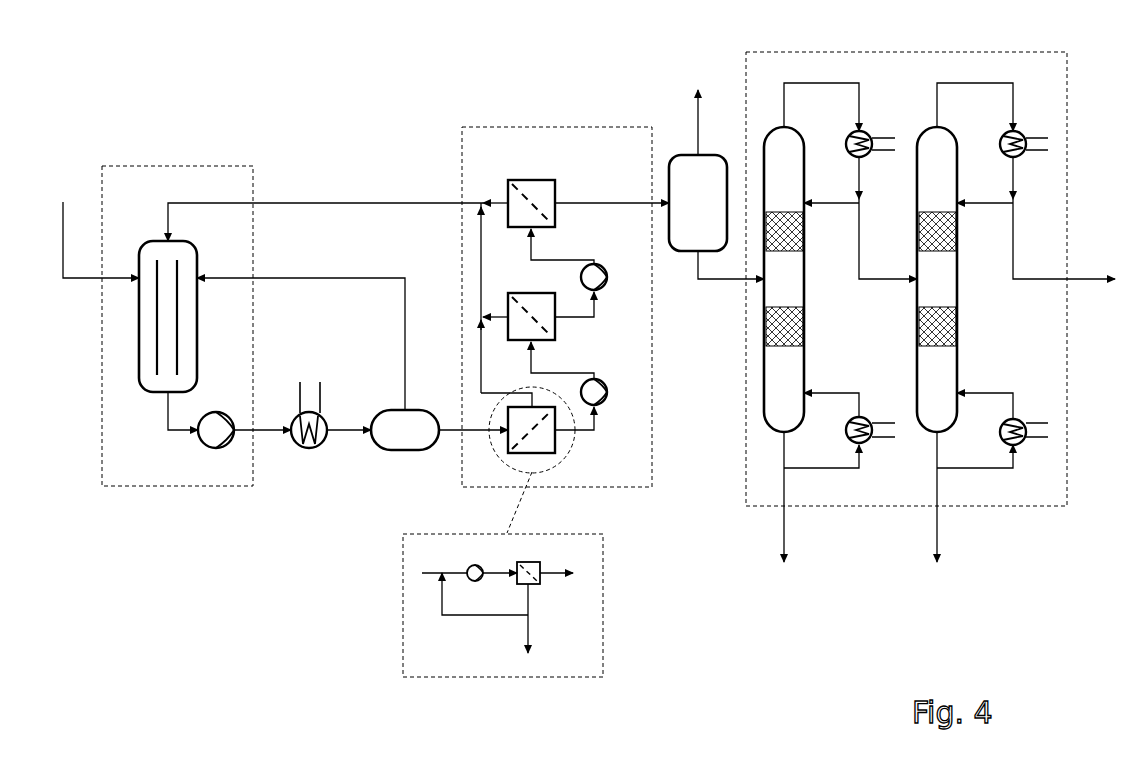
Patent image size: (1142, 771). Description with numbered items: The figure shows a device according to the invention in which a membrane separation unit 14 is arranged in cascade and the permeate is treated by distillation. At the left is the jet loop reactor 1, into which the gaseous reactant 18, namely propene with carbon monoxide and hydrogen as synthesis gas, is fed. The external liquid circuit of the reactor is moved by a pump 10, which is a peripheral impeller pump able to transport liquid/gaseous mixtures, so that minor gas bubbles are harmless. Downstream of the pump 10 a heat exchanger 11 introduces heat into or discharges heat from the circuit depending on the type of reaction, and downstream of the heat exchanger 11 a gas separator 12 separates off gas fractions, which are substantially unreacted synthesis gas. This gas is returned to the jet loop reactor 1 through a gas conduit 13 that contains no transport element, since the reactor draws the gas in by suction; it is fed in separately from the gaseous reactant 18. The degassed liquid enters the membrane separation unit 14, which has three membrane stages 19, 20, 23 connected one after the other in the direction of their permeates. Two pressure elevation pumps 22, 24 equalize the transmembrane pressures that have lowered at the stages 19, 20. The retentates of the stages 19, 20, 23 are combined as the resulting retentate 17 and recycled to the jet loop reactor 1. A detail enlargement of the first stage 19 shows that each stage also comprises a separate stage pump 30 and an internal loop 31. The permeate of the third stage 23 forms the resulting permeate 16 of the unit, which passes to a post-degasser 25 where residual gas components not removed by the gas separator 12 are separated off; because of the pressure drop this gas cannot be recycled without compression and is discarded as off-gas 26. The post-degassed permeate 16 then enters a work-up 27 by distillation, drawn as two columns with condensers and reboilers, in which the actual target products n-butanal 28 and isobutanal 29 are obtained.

The jet loop reactor 1 is at (178, 165).
The pump 10 is at (178, 344).
The heat exchanger 11 is at (280, 398).
The gas separator 12 is at (417, 430).
The gas conduit 13 is at (301, 332).
The membrane separation unit 14 is at (555, 125).
The resulting permeate 16 is at (612, 188).
The resulting retentate 17 is at (325, 207).
The gaseous reactant 18 is at (95, 222).
The first membrane stage 19 is at (544, 430).
The second membrane stage 20 is at (541, 320).
The pressure elevation pump 22 is at (589, 374).
The third membrane stage 23 is at (540, 208).
The pressure elevation pump 24 is at (589, 260).
The post-degasser 25 is at (716, 217).
The off-gas 26 is at (700, 108).
The work-up by distillation 27 is at (908, 52).
The n-butanal 28 is at (866, 523).
The isobutanal 29 is at (1064, 239).
The stage pump 30 is at (503, 574).
The internal loop 31 is at (485, 607).